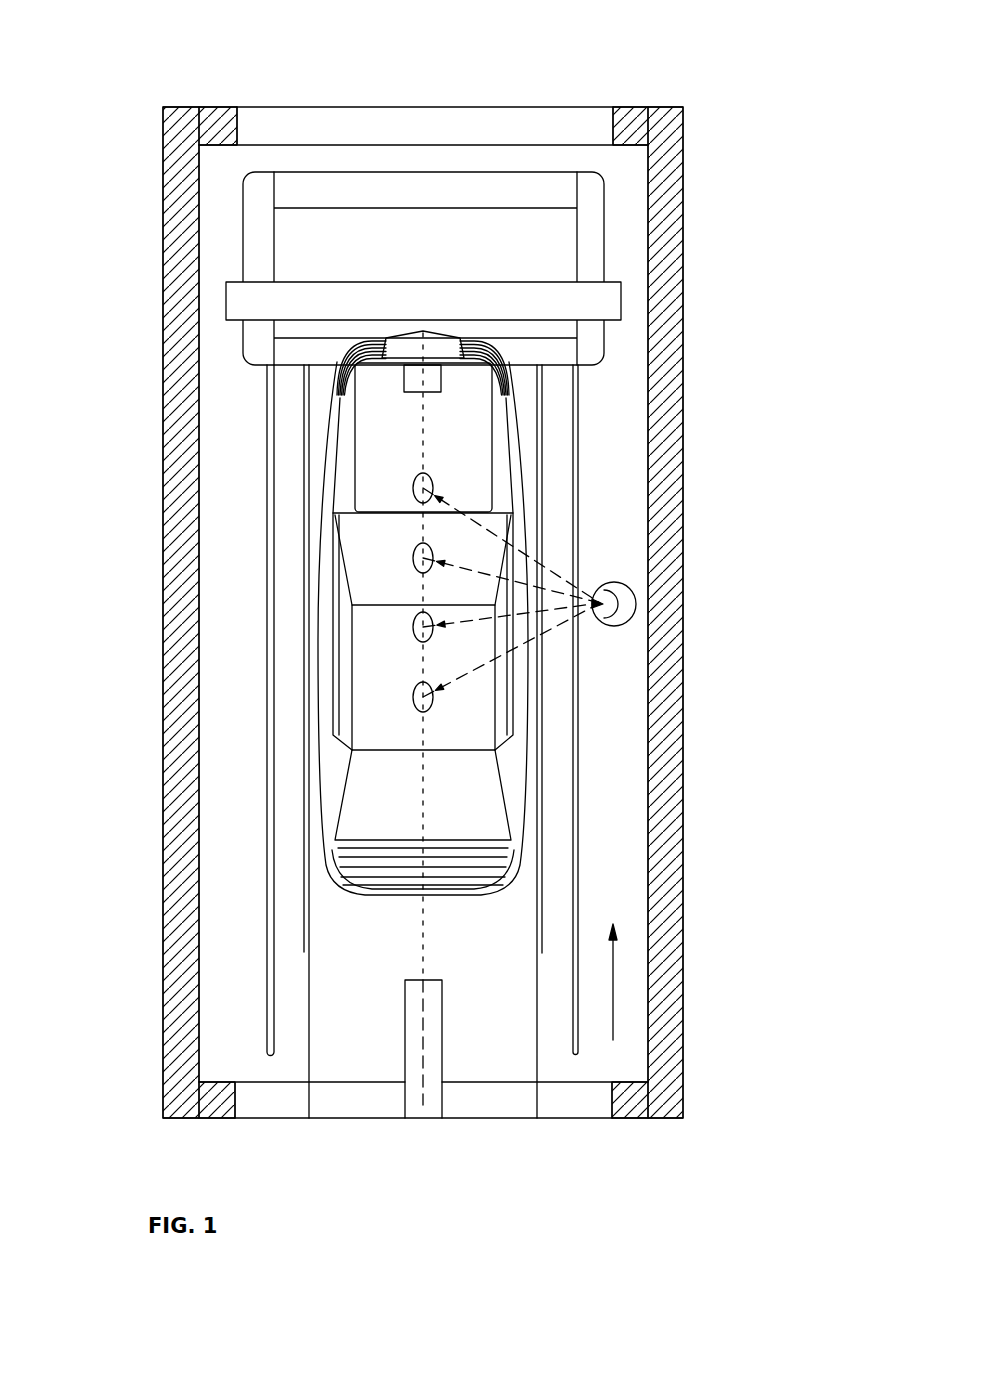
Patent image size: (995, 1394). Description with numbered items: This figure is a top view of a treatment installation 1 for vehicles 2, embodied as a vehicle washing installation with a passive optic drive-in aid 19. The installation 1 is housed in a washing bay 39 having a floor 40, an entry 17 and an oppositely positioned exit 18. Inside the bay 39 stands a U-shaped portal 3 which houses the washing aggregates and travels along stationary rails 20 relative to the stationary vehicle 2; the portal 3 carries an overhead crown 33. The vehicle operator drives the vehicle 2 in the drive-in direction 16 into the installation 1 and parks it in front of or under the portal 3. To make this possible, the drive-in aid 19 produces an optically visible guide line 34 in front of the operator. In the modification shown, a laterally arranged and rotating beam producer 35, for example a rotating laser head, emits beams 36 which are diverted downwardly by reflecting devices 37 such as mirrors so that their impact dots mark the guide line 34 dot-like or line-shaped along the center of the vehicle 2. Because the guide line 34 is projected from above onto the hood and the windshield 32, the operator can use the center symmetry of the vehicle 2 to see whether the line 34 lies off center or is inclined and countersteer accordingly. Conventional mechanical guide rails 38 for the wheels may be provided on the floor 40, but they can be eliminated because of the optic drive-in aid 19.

The treatment installation 1 is at (195, 93).
The vehicle 2 is at (348, 706).
The portal 3 is at (592, 235).
The drive-in direction 16 is at (613, 981).
The entry 17 is at (565, 1105).
The exit 18 is at (300, 130).
The optic drive-in aid 19 is at (612, 400).
The stationary rails 20 is at (267, 921).
The windshield 32 is at (378, 552).
The overhead crown 33 is at (583, 353).
The guide line 34 is at (428, 942).
The beam producer 35 is at (415, 383).
The beam 36 is at (552, 633).
The reflecting device 37 is at (415, 695).
The mechanical guide rails 38 is at (305, 902).
The washing bay 39 is at (185, 165).
The floor 40 is at (227, 991).